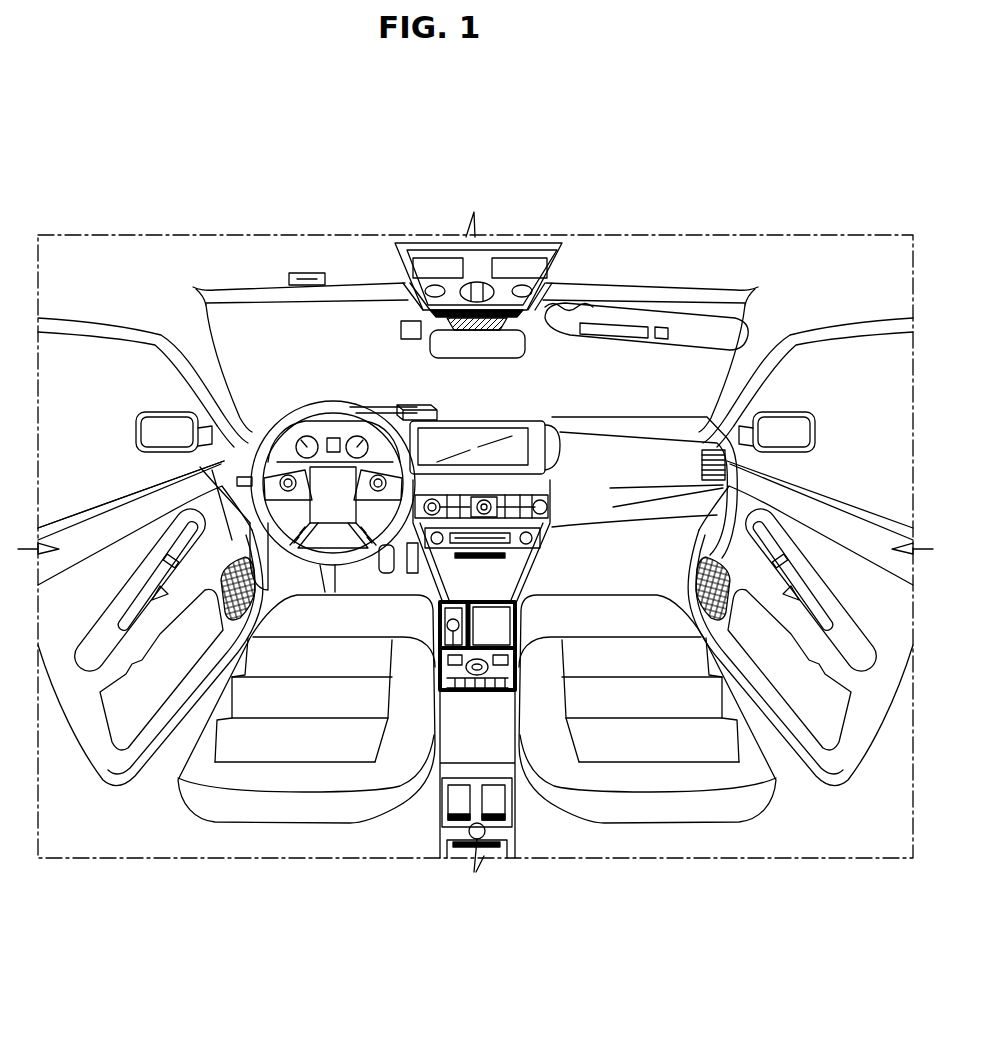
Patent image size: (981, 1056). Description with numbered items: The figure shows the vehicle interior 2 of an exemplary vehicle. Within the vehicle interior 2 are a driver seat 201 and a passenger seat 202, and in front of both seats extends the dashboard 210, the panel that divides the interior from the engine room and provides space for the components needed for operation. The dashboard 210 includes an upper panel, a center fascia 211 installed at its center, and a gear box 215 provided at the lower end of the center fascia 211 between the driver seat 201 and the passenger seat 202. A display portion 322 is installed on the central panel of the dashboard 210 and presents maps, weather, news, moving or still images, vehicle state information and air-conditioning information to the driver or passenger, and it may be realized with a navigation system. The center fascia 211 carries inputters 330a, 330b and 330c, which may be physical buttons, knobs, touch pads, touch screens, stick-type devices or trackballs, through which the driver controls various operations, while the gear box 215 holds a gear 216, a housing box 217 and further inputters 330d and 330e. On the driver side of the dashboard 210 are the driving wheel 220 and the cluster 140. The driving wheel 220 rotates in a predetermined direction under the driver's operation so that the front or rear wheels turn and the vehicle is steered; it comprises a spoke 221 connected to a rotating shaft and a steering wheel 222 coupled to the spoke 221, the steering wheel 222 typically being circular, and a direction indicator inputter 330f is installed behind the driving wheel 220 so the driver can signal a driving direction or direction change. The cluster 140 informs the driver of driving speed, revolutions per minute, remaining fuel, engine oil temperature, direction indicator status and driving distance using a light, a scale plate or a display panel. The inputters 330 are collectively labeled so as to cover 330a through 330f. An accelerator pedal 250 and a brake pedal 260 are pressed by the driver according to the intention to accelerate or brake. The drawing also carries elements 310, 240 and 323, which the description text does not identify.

The vehicle interior 2 is at (114, 174).
The overhead console / internal camera 310 is at (411, 321).
The rear view mirror 240 is at (488, 348).
The dashboard 210 is at (663, 425).
The cluster 140 is at (290, 410).
The driving wheel 220 is at (335, 392).
The steering wheel 222 is at (310, 428).
The spoke 221 is at (348, 455).
The sensor module 323 is at (422, 402).
The display portion 322 is at (493, 424).
The center fascia 211 is at (661, 695).
The input units 330 is at (662, 695).
The inputter 330a is at (457, 490).
The inputter 330b is at (507, 490).
The inputter 330c is at (533, 531).
The inputter 330d is at (490, 655).
The inputter 330e is at (493, 672).
The direction indicator inputter 330f is at (152, 481).
The gear box 215 is at (533, 643).
The housing box 217 is at (497, 612).
The gear 216 is at (440, 632).
The brake pedal 260 is at (380, 575).
The accelerator pedal 250 is at (411, 575).
The driver seat 201 is at (286, 775).
The passenger seat 202 is at (637, 775).